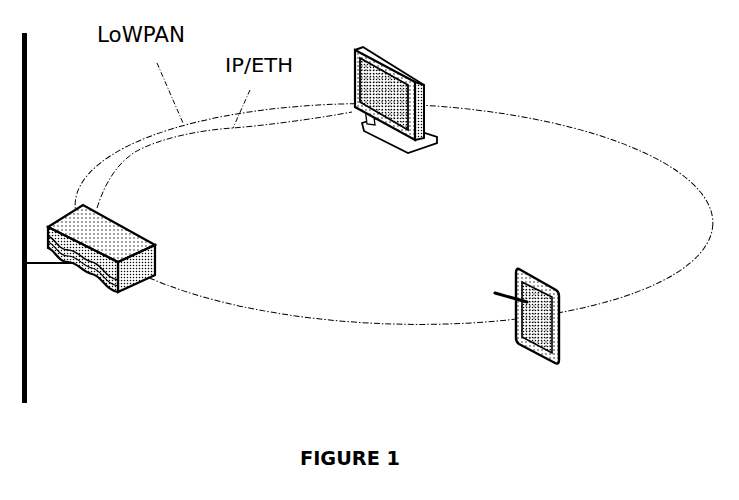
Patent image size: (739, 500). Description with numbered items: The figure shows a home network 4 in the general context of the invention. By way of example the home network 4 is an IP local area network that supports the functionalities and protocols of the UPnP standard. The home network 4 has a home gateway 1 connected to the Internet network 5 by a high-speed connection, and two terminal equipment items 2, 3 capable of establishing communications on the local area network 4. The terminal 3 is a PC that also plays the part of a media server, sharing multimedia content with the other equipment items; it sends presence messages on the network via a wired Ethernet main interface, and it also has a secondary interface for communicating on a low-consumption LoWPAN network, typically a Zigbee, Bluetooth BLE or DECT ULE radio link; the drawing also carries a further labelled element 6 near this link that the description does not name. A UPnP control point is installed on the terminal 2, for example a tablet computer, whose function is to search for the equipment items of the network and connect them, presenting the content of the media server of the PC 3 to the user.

The home gateway 1 is at (160, 253).
The terminal 2 is at (558, 294).
The PC 3 is at (430, 98).
The home network 4 is at (373, 327).
The Internet network 5 is at (26, 88).
The IP/ETH link 6 is at (113, 164).